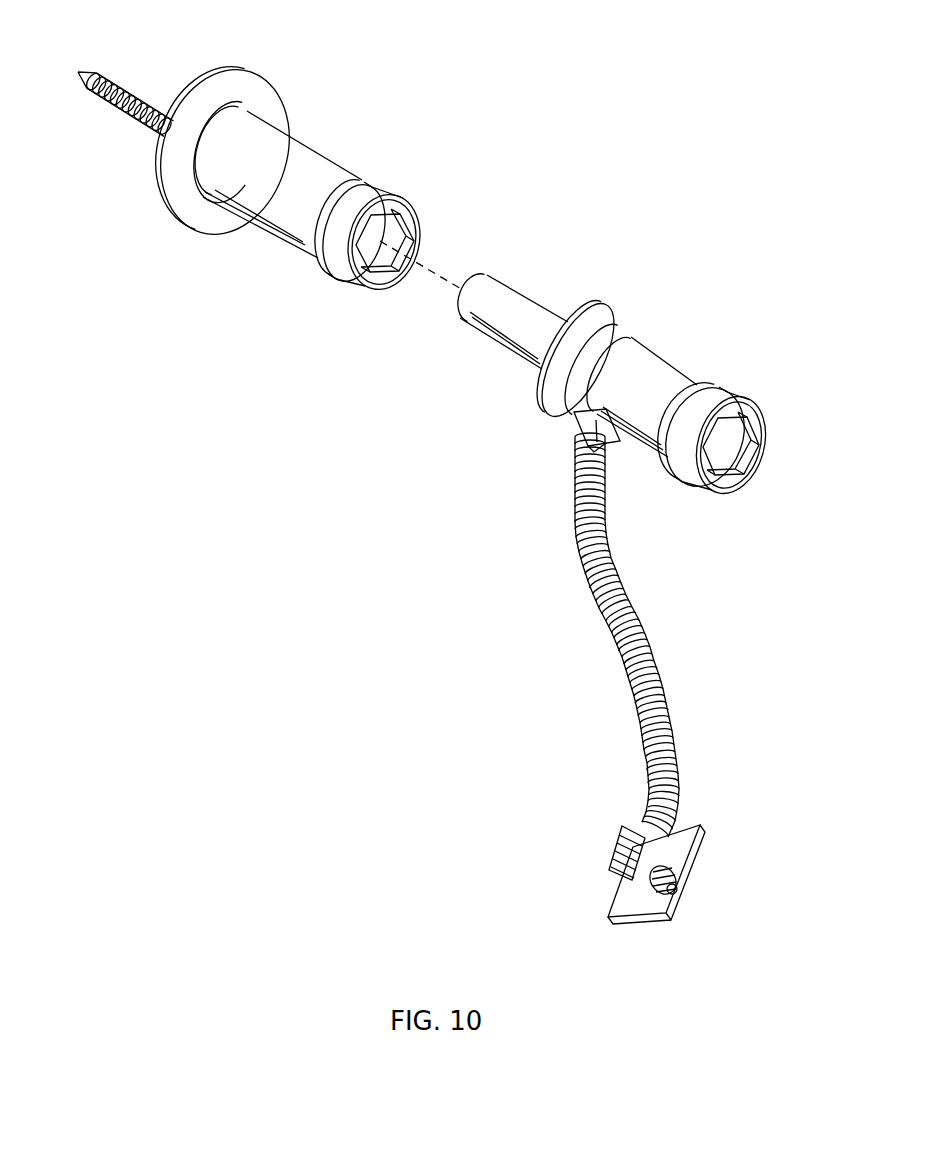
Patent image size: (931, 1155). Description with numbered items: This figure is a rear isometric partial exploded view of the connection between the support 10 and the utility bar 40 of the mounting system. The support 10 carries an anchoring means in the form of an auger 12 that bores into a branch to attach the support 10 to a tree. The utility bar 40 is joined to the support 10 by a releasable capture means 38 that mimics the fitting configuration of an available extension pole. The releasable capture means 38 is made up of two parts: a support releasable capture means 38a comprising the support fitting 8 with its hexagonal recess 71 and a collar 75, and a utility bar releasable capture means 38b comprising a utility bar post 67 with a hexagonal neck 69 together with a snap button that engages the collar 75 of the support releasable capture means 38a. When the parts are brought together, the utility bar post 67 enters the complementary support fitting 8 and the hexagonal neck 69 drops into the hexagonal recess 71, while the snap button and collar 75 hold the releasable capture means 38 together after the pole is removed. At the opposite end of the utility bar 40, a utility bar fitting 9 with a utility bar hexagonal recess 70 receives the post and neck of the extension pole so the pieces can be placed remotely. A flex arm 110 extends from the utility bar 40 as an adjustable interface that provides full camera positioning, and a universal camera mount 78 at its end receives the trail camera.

The auger 12 is at (127, 93).
The support 10 is at (303, 142).
The collar 75 is at (353, 205).
The hexagonal recess 71 is at (400, 235).
The support fitting 8 is at (366, 312).
The utility bar fitting 9 is at (746, 508).
The releasable capture means 38 is at (491, 199).
The support releasable capture means 38a is at (415, 184).
The utility bar releasable capture means 38b is at (584, 279).
The utility bar post 67 is at (513, 308).
The hexagonal neck 69 is at (540, 363).
The utility bar 40 is at (663, 363).
The utility bar hexagonal recess 70 is at (742, 448).
The flex arm 110 is at (613, 628).
The universal camera mount 78 is at (677, 882).